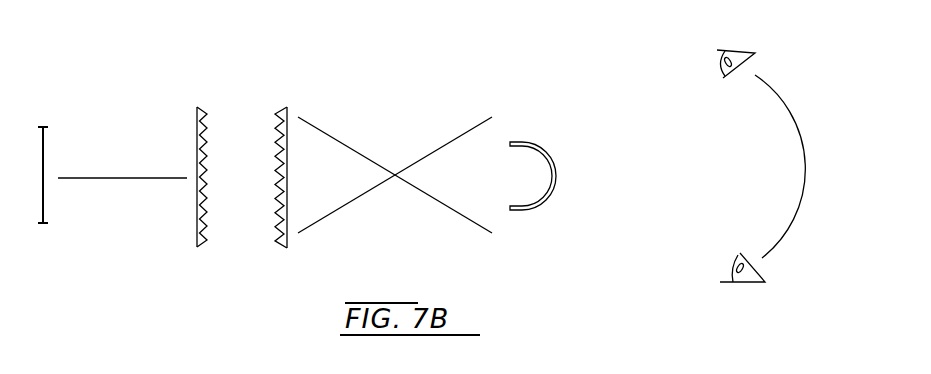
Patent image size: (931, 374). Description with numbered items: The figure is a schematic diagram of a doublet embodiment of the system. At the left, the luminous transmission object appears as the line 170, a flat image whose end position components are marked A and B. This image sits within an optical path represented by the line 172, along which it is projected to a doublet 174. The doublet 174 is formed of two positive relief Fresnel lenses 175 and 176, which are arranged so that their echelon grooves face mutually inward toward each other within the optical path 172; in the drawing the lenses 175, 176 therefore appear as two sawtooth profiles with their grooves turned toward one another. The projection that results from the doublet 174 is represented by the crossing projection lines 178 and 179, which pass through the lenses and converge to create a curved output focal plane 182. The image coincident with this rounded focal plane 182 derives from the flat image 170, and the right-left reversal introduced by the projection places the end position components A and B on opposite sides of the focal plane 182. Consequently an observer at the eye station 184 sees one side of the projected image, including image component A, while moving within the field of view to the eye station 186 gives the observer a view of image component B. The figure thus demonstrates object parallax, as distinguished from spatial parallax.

The line 170 is at (43, 145).
The optical path 172 is at (103, 178).
The doublet 174 is at (305, 60).
The Fresnel lens 175 is at (200, 247).
The Fresnel lens 176 is at (283, 248).
The projection line 178 is at (467, 128).
The projection line 179 is at (338, 140).
The curved output focal plane 182 is at (552, 171).
The eye station 184 is at (737, 50).
The eye station 186 is at (748, 283).